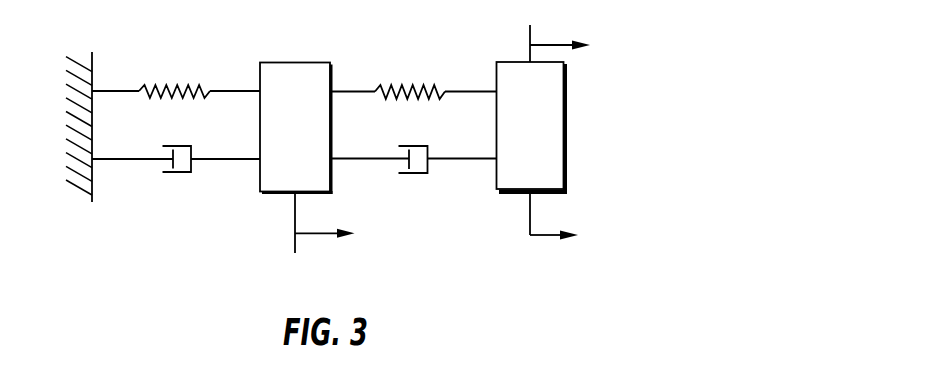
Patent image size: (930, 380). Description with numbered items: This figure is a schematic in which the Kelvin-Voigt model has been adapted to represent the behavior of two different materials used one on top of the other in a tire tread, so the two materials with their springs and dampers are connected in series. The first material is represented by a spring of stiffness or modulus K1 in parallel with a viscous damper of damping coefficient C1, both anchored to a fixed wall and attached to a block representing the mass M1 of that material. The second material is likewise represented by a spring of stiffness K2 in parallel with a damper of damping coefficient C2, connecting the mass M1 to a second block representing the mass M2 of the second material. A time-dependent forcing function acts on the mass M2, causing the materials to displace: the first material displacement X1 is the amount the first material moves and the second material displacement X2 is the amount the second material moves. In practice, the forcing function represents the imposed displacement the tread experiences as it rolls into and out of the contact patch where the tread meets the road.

The stiffness of first material K1 is at (176, 66).
The viscous damping coefficient of first material C1 is at (176, 184).
The mass of first material M1 is at (296, 129).
The stiffness of second material K2 is at (414, 66).
The viscous damping coefficient of second material C2 is at (414, 184).
The mass of second material M2 is at (532, 128).
The displacement of first material X1 is at (330, 238).
The displacement of second material X2 is at (561, 239).